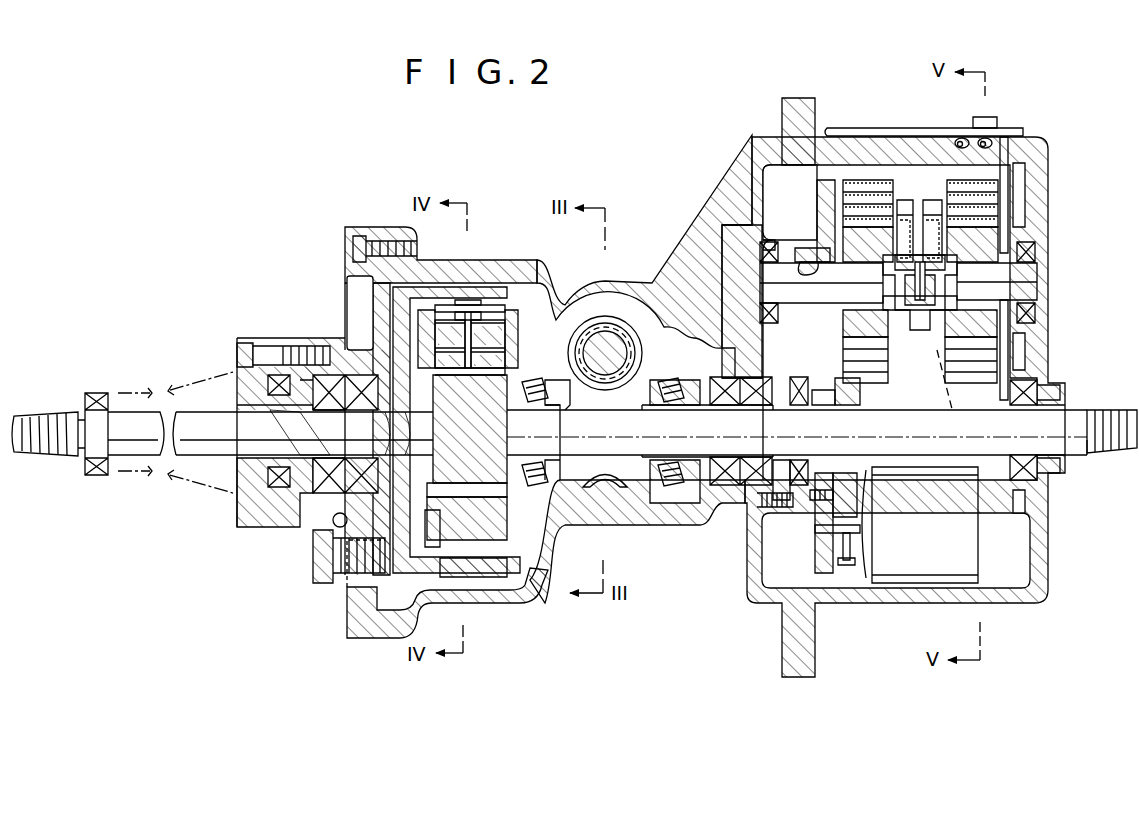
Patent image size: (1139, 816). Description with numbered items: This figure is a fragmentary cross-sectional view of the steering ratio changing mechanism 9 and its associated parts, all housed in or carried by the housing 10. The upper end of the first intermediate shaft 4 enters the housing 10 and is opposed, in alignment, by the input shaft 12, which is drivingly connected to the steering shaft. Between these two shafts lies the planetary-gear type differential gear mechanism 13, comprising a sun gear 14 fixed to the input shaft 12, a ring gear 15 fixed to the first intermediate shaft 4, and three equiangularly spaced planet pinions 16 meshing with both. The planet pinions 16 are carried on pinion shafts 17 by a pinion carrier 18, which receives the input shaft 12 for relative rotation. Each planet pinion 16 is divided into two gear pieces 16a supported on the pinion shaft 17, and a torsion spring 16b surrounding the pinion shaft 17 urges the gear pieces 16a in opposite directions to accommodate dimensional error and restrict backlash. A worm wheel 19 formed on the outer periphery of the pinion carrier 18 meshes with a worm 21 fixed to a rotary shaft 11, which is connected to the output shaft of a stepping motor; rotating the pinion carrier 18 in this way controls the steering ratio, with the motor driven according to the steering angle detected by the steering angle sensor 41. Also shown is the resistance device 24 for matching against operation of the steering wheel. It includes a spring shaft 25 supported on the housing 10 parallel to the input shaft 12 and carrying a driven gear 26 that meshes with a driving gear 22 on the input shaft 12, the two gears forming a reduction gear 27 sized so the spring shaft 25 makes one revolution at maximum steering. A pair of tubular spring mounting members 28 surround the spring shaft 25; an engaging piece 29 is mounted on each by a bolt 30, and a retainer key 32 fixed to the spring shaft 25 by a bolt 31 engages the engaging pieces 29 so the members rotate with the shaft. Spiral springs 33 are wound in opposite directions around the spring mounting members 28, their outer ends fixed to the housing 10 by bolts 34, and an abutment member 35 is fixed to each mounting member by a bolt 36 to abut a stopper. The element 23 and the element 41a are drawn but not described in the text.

The first intermediate shaft 4 is at (125, 455).
The steering ratio changing mechanism 9 is at (382, 216).
The housing 10 is at (627, 288).
The rotary shaft 11 is at (600, 347).
The input shaft 12 is at (1077, 442).
The differential gear mechanism 13 is at (510, 580).
The sun gear 14 is at (498, 438).
The ring gear 15 is at (477, 573).
The planet pinions 16 is at (505, 300).
The gear pieces 16a is at (455, 305).
The torsion spring 16b is at (495, 340).
The pinion shafts 17 is at (498, 335).
The pinion carrier 18 is at (590, 505).
The worm wheel 19 is at (607, 490).
The worm 21 is at (640, 337).
The driving gear 22 is at (858, 393).
The motor housing 23 is at (807, 562).
The resistance device 24 is at (878, 158).
The spring shaft 25 is at (1023, 273).
The driven gear 26 is at (815, 212).
The reduction gear 27 is at (808, 168).
The spring mounting members 28 is at (813, 175).
The engaging piece 29 is at (947, 395).
The bolt 30 is at (927, 337).
The bolt 31 is at (1010, 293).
The retainer key 32 is at (1040, 323).
The spiral springs 33 is at (856, 178).
The bolts 34 is at (985, 136).
The abutment member 35 is at (930, 198).
The bolt 36 is at (907, 198).
The steering angle sensor 41 is at (985, 562).
The solenoid bracket 41a is at (817, 520).